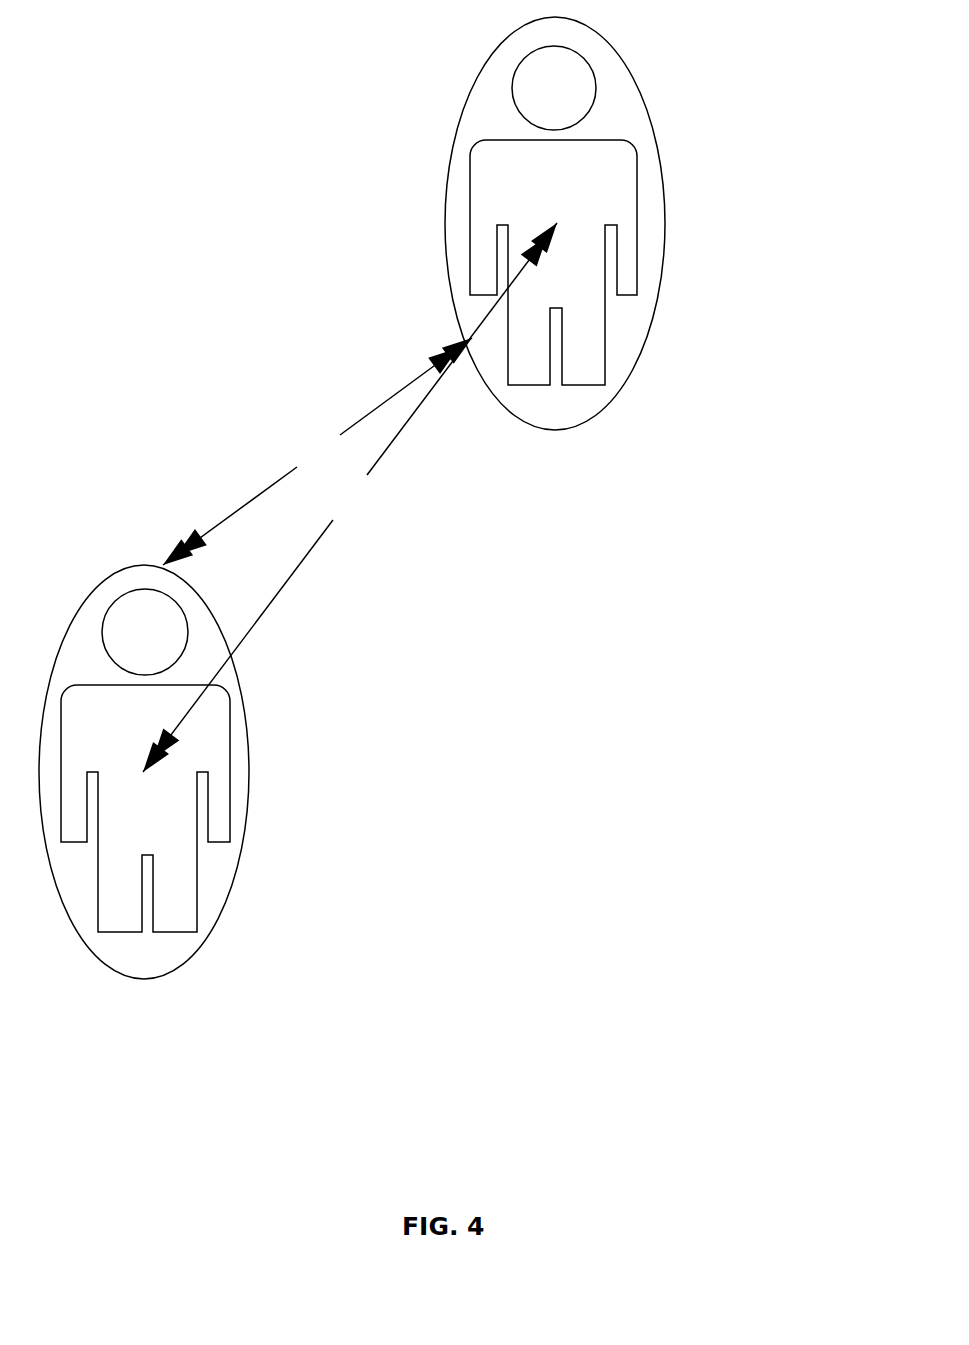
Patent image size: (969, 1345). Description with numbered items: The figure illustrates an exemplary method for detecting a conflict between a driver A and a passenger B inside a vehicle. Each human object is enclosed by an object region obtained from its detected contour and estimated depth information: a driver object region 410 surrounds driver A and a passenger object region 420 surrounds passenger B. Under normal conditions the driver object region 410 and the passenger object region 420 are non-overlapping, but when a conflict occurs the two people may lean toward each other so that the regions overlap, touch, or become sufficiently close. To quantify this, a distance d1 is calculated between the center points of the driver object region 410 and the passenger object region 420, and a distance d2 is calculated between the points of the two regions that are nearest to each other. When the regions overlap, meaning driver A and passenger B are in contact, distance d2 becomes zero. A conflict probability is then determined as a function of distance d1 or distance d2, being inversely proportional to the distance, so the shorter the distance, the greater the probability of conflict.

The driver object region 410 is at (624, 223).
The passenger object region 420 is at (215, 772).
The driver A is at (547, 206).
The passenger B is at (158, 797).
The distance between center points d1 is at (350, 497).
The distance between nearest points d2 is at (317, 451).